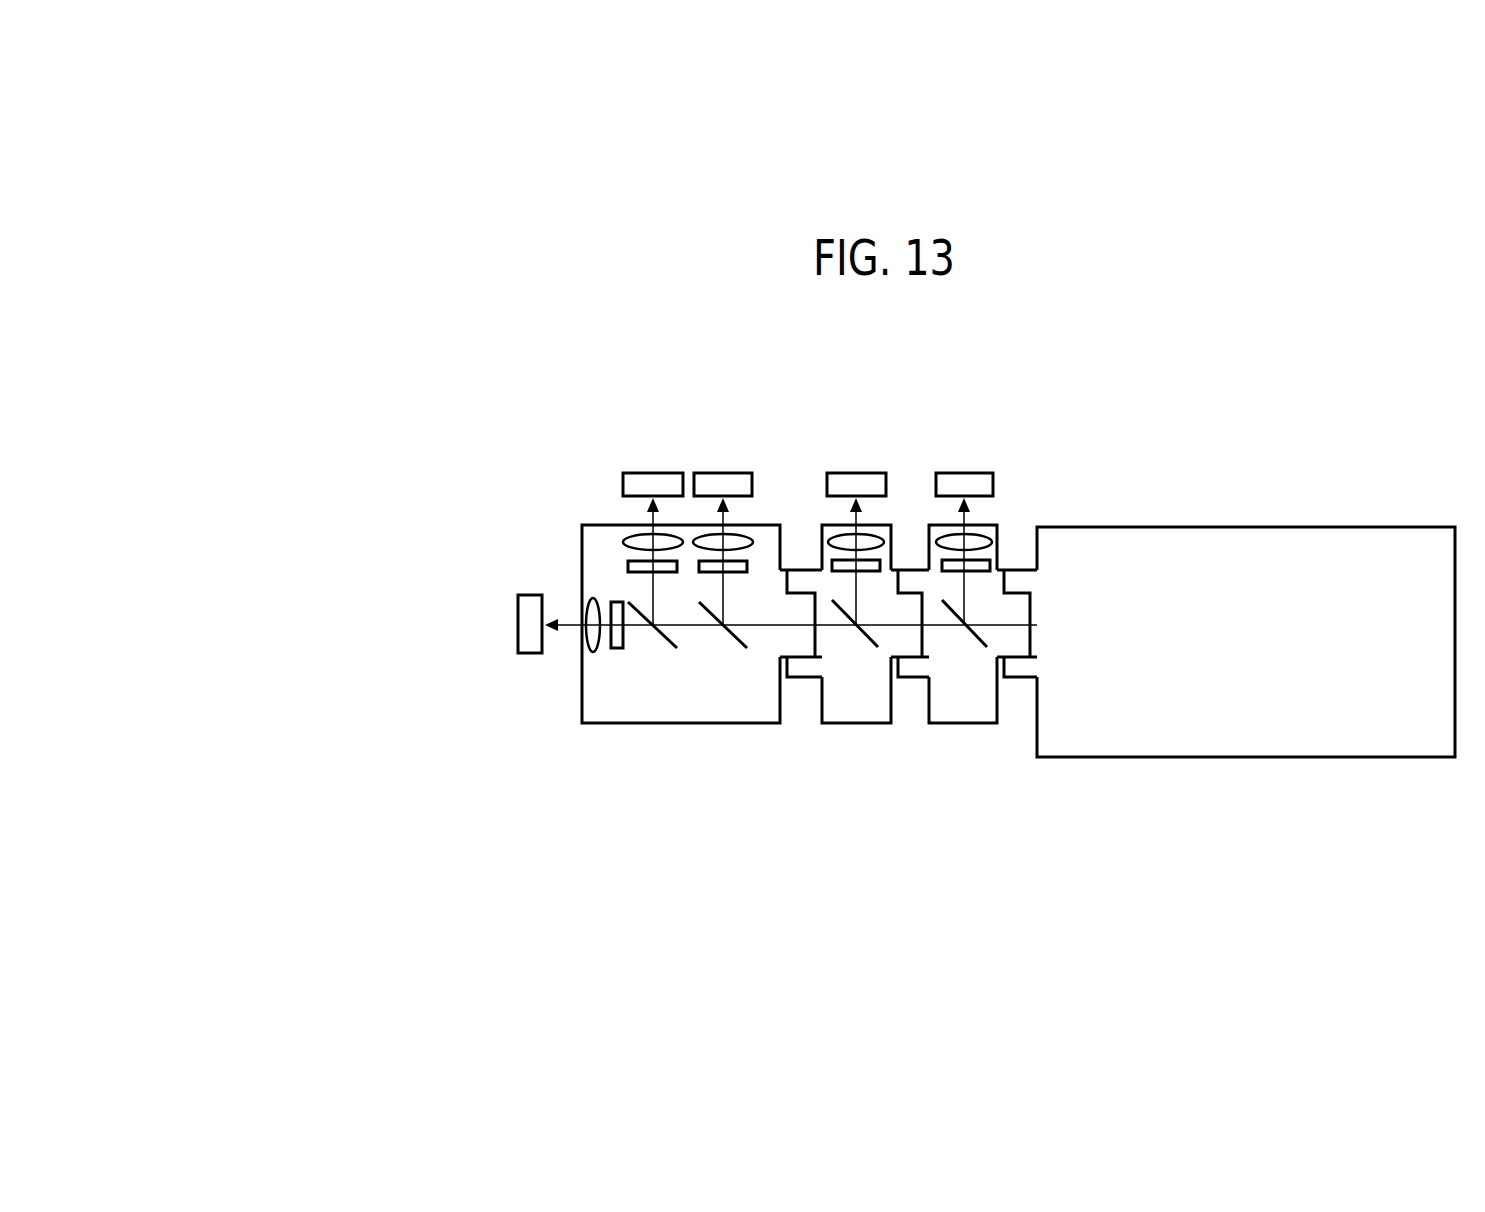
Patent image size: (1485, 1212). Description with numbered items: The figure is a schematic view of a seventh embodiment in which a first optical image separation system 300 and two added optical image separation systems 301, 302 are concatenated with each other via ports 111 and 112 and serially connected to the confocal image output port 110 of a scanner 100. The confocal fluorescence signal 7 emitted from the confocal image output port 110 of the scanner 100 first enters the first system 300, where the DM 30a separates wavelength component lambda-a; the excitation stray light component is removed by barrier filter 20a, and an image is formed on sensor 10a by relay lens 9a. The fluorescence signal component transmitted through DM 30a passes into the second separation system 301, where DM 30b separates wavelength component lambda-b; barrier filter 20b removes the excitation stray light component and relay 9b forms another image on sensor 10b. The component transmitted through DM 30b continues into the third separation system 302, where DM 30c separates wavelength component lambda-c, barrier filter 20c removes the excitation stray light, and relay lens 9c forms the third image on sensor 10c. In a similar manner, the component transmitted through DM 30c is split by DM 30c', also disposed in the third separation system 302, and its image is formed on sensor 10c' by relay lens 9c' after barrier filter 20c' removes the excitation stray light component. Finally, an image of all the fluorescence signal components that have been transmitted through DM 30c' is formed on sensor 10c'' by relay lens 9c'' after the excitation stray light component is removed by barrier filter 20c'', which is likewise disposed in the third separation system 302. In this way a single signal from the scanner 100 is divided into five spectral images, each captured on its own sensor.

The confocal fluorescence signal 7 is at (1012, 627).
The scanner 100 is at (1245, 525).
The confocal image output port 110 is at (1022, 683).
The port 111 is at (913, 670).
The port 112 is at (803, 672).
The first optical image separation system 300 is at (967, 725).
The second optical image separation system 301 is at (873, 725).
The third optical image separation system 302 is at (592, 730).
The sensor 10a is at (962, 472).
The sensor 10b is at (856, 472).
The sensor 10c is at (723, 452).
The sensor 10c' is at (841, 432).
The sensor 10c'' is at (353, 604).
The relay lens 9a is at (985, 537).
The relay 9b is at (878, 537).
The relay lens 9c is at (743, 479).
The relay lens 9c' is at (520, 490).
The relay lens 9c'' is at (459, 646).
The barrier filter 20a is at (995, 566).
The barrier filter 20b is at (880, 565).
The barrier filter 20c is at (757, 526).
The barrier filter 20c' is at (467, 532).
The barrier filter 20c'' is at (435, 668).
The DM 30a is at (963, 634).
The DM 30b is at (855, 634).
The DM 30c is at (717, 689).
The DM 30c' is at (644, 689).